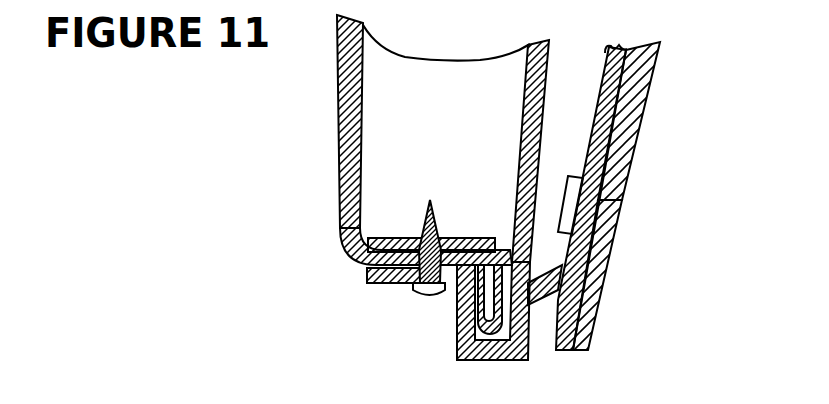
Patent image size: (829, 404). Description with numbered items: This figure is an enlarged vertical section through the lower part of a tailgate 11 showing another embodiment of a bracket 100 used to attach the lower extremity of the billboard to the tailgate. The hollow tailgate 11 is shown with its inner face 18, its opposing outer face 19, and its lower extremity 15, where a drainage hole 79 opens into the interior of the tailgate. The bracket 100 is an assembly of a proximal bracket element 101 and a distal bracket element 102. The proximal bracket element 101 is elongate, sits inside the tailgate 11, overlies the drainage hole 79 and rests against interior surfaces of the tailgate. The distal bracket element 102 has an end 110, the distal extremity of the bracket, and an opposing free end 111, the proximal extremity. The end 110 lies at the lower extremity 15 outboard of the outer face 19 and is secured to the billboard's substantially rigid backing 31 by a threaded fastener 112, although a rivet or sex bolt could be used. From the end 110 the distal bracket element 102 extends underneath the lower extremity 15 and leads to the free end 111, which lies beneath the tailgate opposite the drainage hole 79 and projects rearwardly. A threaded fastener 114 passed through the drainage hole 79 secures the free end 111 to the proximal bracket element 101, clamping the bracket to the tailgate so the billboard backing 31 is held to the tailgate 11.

The tailgate 11 is at (334, 166).
The lower extremity 15 is at (352, 262).
The inner face 18 is at (340, 90).
The outer face 19 is at (552, 77).
The backing 31 is at (641, 112).
The drainage hole 79 is at (380, 237).
The bracket 100 is at (542, 360).
The proximal bracket element 101 is at (481, 237).
The distal bracket element 102 is at (627, 168).
The end 110 is at (641, 58).
The free end 111 is at (391, 283).
The threaded fastener 112 is at (625, 216).
The threaded fastener 114 is at (432, 203).